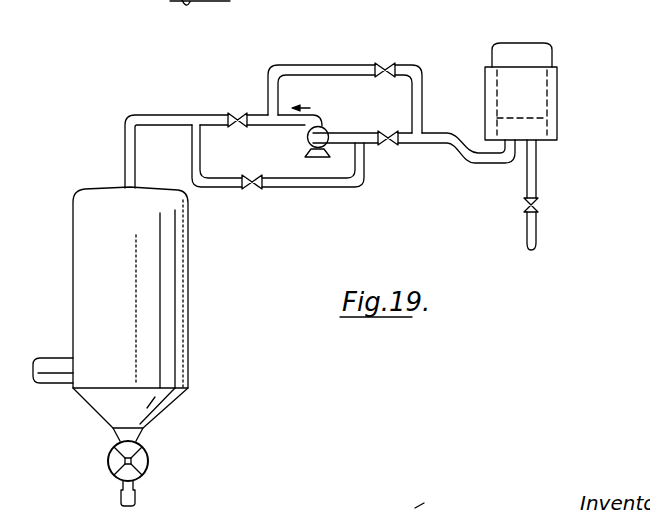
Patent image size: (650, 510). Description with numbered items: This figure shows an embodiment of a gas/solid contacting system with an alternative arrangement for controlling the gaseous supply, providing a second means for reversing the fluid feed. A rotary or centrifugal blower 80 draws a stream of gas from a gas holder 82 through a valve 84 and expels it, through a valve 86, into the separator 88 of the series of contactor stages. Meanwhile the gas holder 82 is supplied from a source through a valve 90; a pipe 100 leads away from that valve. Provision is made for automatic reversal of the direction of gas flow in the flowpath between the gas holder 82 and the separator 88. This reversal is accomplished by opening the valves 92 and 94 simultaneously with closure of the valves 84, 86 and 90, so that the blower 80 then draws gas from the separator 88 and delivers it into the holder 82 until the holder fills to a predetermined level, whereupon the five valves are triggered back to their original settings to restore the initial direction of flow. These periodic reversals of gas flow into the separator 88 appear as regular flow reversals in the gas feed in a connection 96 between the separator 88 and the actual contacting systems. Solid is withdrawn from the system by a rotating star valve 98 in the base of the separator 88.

The rotary or centrifugal blower 80 is at (308, 140).
The gas holder 82 is at (507, 44).
The valve 84 is at (390, 146).
The valve 86 is at (236, 112).
The separator 88 is at (184, 264).
The valve 90 is at (524, 205).
The valve 92 is at (385, 63).
The valve 94 is at (252, 190).
The connection 96 is at (55, 375).
The rotating star valve 98 is at (148, 458).
The outlet pipe 100 is at (537, 235).